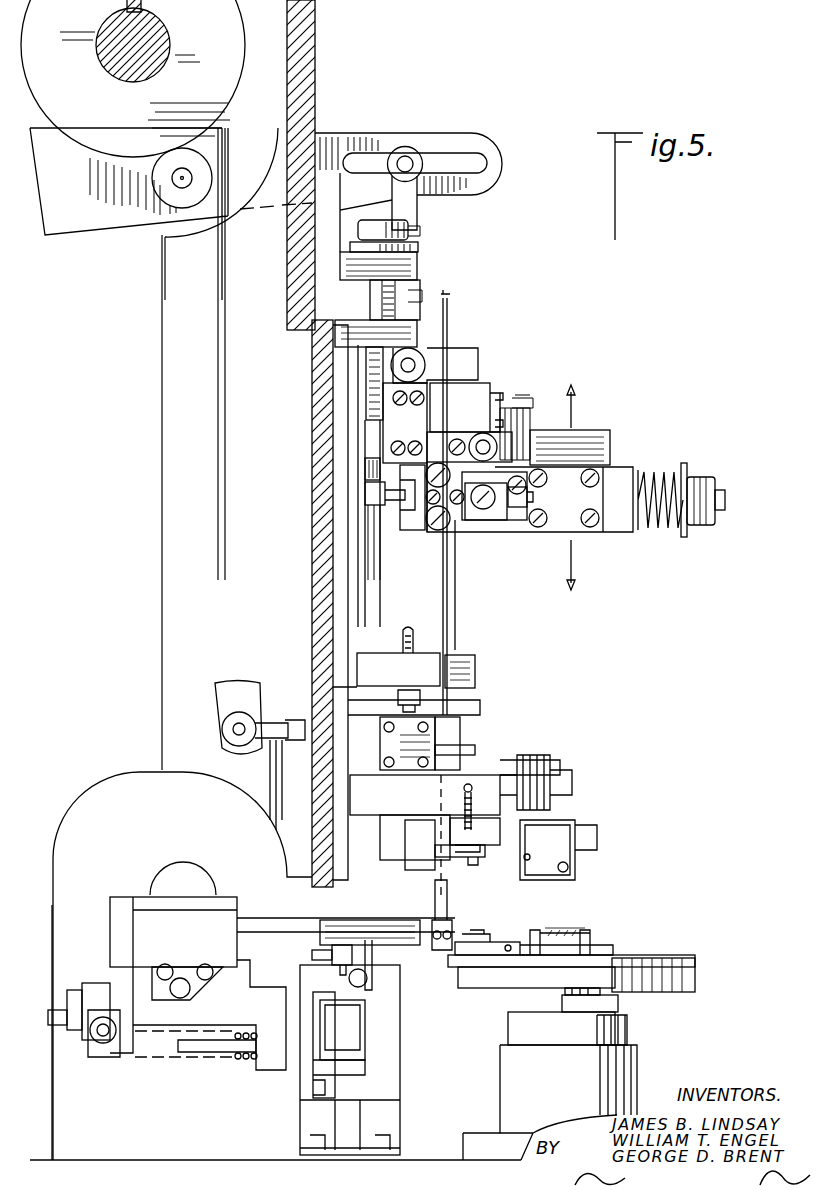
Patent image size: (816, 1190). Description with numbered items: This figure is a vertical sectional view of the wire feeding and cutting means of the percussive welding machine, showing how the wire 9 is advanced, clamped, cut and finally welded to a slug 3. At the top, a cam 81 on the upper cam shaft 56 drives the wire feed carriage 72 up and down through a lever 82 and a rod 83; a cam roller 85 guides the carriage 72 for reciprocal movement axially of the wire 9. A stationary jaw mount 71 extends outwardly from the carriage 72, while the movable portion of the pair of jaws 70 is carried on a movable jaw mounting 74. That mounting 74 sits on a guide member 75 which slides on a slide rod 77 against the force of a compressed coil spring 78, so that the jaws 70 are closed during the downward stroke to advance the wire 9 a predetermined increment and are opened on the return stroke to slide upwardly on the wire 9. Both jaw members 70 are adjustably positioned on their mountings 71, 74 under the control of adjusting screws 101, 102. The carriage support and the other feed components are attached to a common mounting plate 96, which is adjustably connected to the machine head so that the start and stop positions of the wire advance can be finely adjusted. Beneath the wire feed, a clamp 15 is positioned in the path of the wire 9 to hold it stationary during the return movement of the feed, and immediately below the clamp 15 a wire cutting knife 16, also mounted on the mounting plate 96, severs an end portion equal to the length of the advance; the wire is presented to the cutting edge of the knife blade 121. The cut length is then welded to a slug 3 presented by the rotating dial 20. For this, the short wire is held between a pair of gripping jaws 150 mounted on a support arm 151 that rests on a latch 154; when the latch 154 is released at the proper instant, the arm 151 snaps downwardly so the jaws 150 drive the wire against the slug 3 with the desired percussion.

The supporting rod or slug 3 is at (458, 947).
The wire 9 is at (450, 315).
The clamp 15 is at (455, 748).
The wire cutting knife 16 is at (462, 832).
The rotating dial 20 is at (522, 980).
The upper cam shaft 56 is at (170, 43).
The jaws 70 is at (443, 470).
The stationary jaw mount 71 is at (428, 532).
The wire feed carriage 72 is at (392, 486).
The movable jaw mounting 74 is at (495, 520).
The guide member 75 is at (530, 497).
The slide rod 77 is at (690, 455).
The compressed coil spring 78 is at (658, 530).
The cam 81 is at (133, 78).
The lever 82 is at (332, 140).
The rod 83 is at (417, 203).
The cam roller 85 is at (368, 494).
The mounting plate 96 is at (312, 598).
The adjusting screw 101 is at (365, 475).
The adjusting screw 102 is at (540, 525).
The knife blade 121 is at (455, 858).
The gripping jaws 150 is at (340, 920).
The support arm 151 is at (167, 983).
The latch 154 is at (382, 963).